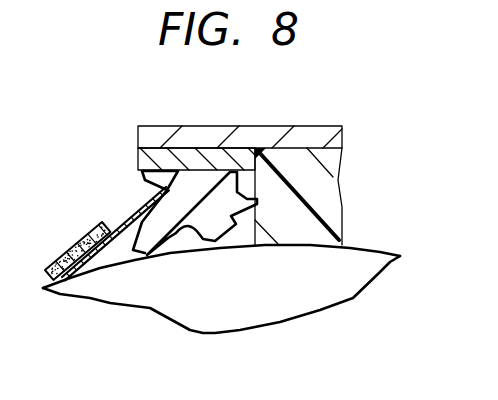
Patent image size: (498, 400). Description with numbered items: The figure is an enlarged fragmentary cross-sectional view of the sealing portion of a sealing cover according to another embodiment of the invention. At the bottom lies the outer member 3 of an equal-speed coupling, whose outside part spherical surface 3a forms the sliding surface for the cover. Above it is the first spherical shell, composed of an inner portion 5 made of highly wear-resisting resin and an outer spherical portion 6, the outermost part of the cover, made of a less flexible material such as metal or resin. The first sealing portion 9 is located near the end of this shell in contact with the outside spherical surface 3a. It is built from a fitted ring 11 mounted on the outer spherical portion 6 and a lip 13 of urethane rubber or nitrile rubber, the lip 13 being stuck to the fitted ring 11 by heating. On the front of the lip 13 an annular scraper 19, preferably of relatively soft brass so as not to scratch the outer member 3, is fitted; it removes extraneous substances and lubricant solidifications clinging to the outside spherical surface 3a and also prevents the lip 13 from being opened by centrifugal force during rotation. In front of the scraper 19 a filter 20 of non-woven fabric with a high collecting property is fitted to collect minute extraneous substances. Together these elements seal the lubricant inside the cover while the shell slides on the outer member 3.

The outer member 3 is at (221, 304).
The outside part spherical surface 3a is at (407, 234).
The inner portion 5 is at (323, 196).
The outer spherical portion 6 is at (240, 115).
The first sealing portion 9 is at (121, 171).
The fitted ring 11 is at (196, 126).
The lip 13 is at (195, 244).
The annular scraper 19 is at (115, 271).
The filter 20 is at (77, 234).